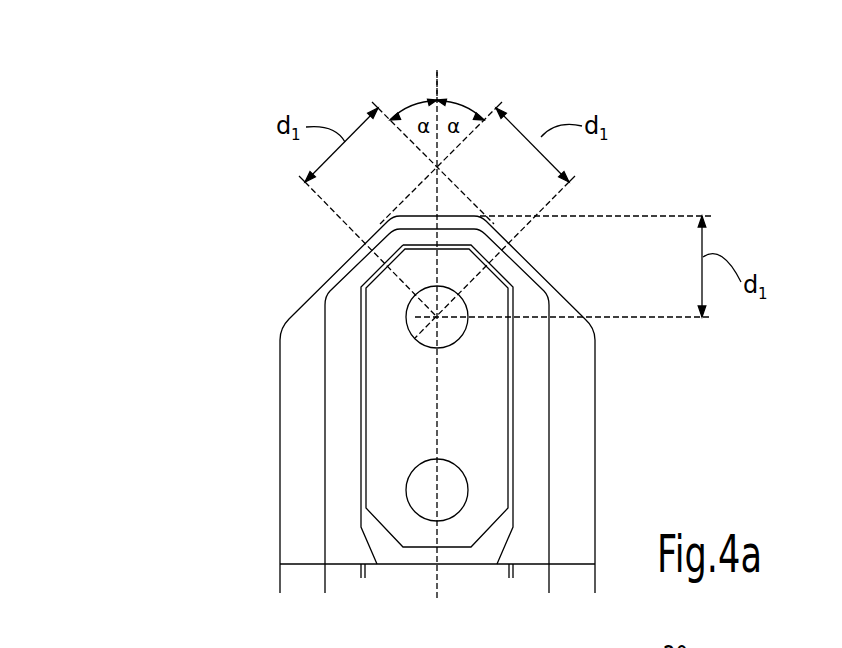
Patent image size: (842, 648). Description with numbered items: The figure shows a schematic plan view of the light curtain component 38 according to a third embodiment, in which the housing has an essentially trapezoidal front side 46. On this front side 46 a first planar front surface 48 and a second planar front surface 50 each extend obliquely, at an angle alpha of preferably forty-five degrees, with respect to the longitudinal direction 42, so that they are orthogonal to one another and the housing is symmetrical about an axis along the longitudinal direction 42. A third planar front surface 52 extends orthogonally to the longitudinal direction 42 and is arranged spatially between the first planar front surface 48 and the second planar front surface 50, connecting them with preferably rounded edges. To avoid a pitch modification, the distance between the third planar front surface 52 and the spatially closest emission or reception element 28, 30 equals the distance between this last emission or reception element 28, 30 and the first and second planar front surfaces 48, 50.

The light curtain component 38 is at (204, 266).
The longitudinal direction 42 is at (441, 88).
The front side 46 is at (548, 85).
The first planar front surface 48 is at (328, 266).
The second planar front surface 50 is at (549, 274).
The third planar front surface 52 is at (450, 210).
The emission or reception element 28 is at (292, 409).
The emission or reception element 30 is at (415, 338).